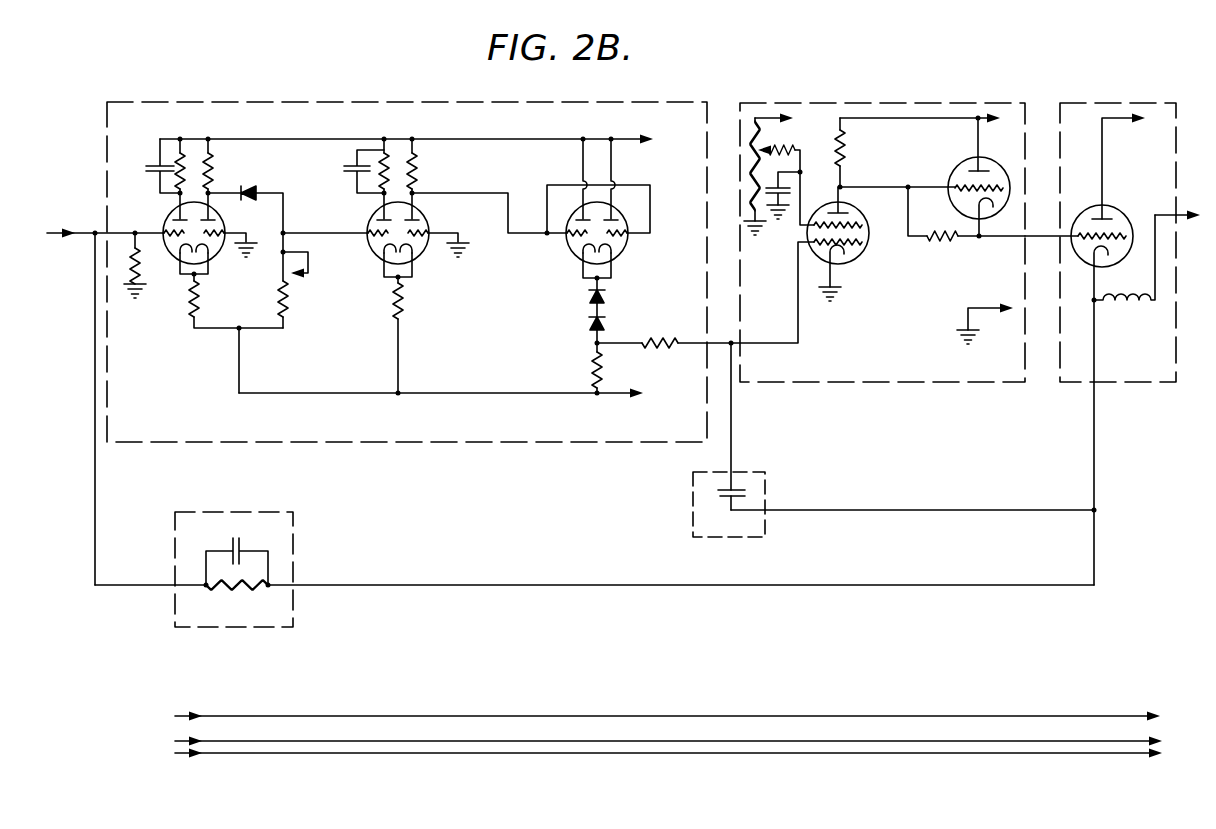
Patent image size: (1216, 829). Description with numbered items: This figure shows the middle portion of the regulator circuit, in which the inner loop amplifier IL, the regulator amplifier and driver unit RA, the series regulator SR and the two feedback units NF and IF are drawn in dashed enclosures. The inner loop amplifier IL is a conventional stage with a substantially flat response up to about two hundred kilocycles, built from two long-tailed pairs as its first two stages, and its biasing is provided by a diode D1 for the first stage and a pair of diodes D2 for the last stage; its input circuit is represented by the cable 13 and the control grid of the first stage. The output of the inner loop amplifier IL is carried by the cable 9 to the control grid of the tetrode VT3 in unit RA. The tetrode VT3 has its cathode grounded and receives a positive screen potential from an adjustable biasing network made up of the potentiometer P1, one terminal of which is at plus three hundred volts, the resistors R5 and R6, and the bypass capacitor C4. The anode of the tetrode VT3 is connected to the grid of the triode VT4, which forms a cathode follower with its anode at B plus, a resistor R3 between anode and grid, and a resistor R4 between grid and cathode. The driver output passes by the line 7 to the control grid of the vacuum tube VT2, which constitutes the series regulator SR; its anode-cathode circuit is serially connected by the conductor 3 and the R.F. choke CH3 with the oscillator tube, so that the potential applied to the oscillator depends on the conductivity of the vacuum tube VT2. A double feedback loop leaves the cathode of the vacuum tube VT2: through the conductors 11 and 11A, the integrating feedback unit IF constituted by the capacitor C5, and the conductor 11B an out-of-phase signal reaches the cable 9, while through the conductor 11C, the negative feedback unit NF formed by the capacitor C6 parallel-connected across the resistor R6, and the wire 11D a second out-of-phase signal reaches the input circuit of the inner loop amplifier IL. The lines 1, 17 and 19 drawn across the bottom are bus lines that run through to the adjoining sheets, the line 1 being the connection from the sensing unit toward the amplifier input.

The line 1 is at (621, 756).
The conductor 3 is at (1182, 215).
The line 7 is at (1046, 236).
The cable 9 is at (723, 342).
The conductor 11 is at (1096, 432).
The conductor 11A is at (921, 512).
The conductor 11B is at (734, 427).
The conductor 11C is at (916, 587).
The wire 11D is at (97, 492).
The cable 13 is at (88, 230).
The bus 17 is at (598, 741).
The bus 19 is at (553, 702).
The inner loop amplifier IL is at (462, 99).
The regulator amplifier and driver unit RA is at (906, 102).
The series regulator SR is at (1106, 102).
The integrating feedback unit IF is at (767, 486).
The negative feedback unit NF is at (298, 540).
The potentiometer P1 is at (752, 140).
The resistor R3 is at (846, 150).
The resistor R4 is at (940, 243).
The resistor R5 is at (752, 196).
The resistor R6 is at (225, 593).
The bypass capacitor C4 is at (780, 188).
The capacitor C5 is at (728, 501).
The capacitor C6 is at (243, 551).
The diode D1 is at (249, 200).
The diode D2 is at (588, 298).
The vacuum tube VT2 is at (1118, 211).
The tetrode VT3 is at (860, 258).
The triode VT4 is at (960, 171).
The R.F. choke CH3 is at (1130, 306).